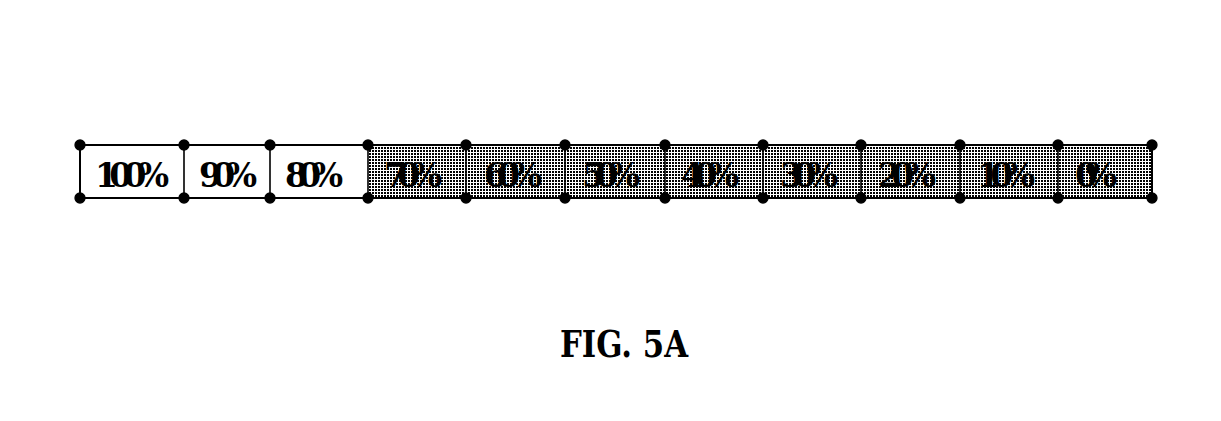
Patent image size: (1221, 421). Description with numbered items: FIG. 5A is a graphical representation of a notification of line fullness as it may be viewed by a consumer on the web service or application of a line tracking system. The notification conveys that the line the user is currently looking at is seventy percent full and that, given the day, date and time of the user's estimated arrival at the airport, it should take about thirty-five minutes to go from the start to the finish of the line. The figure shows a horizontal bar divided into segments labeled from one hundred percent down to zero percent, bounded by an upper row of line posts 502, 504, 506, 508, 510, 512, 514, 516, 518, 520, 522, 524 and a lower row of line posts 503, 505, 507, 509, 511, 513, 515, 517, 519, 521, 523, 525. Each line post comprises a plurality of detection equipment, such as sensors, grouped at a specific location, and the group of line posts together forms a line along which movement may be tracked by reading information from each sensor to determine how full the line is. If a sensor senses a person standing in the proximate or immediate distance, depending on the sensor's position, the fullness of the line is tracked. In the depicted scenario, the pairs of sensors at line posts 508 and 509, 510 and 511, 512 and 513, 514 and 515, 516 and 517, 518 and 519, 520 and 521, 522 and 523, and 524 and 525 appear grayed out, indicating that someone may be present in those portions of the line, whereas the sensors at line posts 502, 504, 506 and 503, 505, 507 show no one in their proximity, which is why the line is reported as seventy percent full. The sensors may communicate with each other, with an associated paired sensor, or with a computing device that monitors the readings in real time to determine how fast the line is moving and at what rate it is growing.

The line post 502 is at (80, 142).
The line post 503 is at (80, 201).
The line post 504 is at (184, 142).
The line post 505 is at (184, 201).
The line post 506 is at (270, 142).
The line post 507 is at (270, 201).
The line post 508 is at (368, 142).
The line post 509 is at (368, 201).
The line post 510 is at (466, 142).
The line post 511 is at (466, 201).
The line post 512 is at (565, 142).
The line post 513 is at (565, 201).
The line post 514 is at (665, 142).
The line post 515 is at (665, 201).
The line post 516 is at (763, 142).
The line post 517 is at (763, 201).
The line post 518 is at (861, 142).
The line post 519 is at (861, 201).
The line post 520 is at (960, 142).
The line post 521 is at (960, 201).
The line post 522 is at (1058, 142).
The line post 523 is at (1058, 201).
The line post 524 is at (1152, 142).
The line post 525 is at (1152, 201).